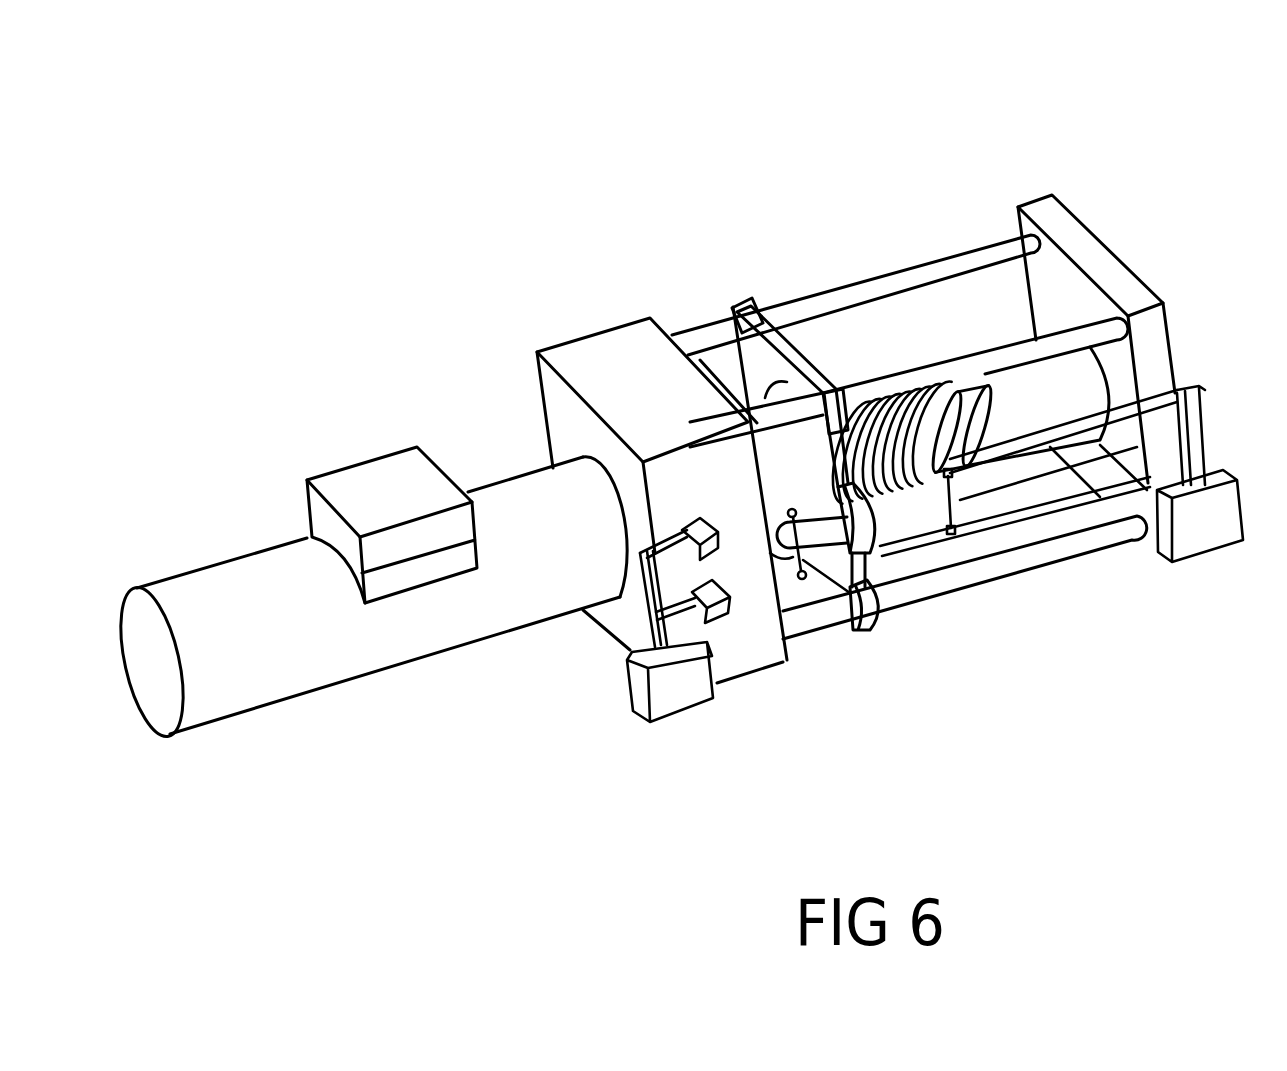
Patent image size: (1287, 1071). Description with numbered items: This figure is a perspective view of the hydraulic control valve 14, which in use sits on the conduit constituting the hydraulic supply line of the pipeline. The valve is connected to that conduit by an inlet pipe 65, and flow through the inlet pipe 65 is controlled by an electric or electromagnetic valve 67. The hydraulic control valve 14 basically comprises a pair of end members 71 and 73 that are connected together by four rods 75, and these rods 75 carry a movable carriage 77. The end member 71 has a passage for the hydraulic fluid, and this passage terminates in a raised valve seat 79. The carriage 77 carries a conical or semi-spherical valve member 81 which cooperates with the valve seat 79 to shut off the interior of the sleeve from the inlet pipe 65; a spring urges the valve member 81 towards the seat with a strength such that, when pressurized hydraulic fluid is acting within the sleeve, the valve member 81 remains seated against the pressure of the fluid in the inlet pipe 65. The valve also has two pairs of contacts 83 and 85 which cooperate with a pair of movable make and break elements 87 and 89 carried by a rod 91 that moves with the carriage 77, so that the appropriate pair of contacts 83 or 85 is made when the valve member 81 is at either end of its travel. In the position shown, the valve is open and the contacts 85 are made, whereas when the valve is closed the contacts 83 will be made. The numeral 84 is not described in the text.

The hydraulic control valve 14 is at (707, 268).
The inlet pipe 65 is at (317, 633).
The electric or electromagnetic valve 67 is at (388, 473).
The end member 71 is at (645, 347).
The end member 73 is at (1062, 235).
The rods 75 is at (928, 383).
The movable carriage 77 is at (835, 590).
The raised valve seat 79 is at (765, 520).
The valve member 81 is at (724, 318).
The contacts 83 is at (706, 608).
The post 84 is at (953, 533).
The contacts 85 is at (950, 478).
The make and break element 87 is at (801, 580).
The make and break element 89 is at (938, 385).
The rod 91 is at (864, 368).